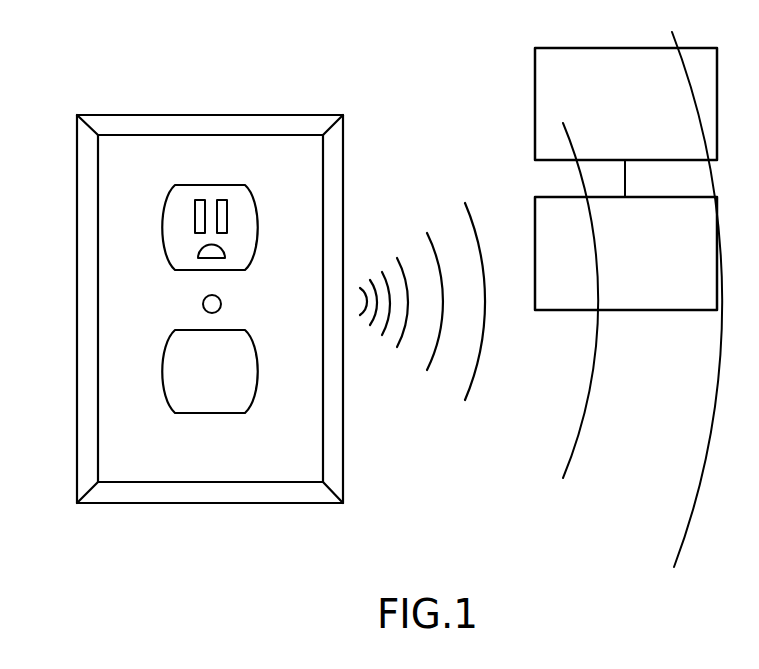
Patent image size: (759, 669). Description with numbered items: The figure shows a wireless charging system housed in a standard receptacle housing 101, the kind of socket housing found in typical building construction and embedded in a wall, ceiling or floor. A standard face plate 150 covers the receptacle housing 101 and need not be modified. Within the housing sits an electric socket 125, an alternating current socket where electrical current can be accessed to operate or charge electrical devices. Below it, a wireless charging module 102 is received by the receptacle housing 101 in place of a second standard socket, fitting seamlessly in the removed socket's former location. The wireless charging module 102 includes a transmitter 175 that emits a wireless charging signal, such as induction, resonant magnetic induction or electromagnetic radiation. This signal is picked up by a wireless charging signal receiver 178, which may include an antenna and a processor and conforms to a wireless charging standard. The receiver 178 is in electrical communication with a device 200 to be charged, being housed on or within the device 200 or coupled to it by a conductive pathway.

The standard receptacle housing 101 is at (185, 320).
The wireless charging module 102 is at (225, 392).
The electric socket 125 is at (253, 230).
The standard face plate 150 is at (150, 472).
The transmitter 175 is at (255, 387).
The wireless charging signal receiver 178 is at (626, 253).
The device 200 is at (626, 104).